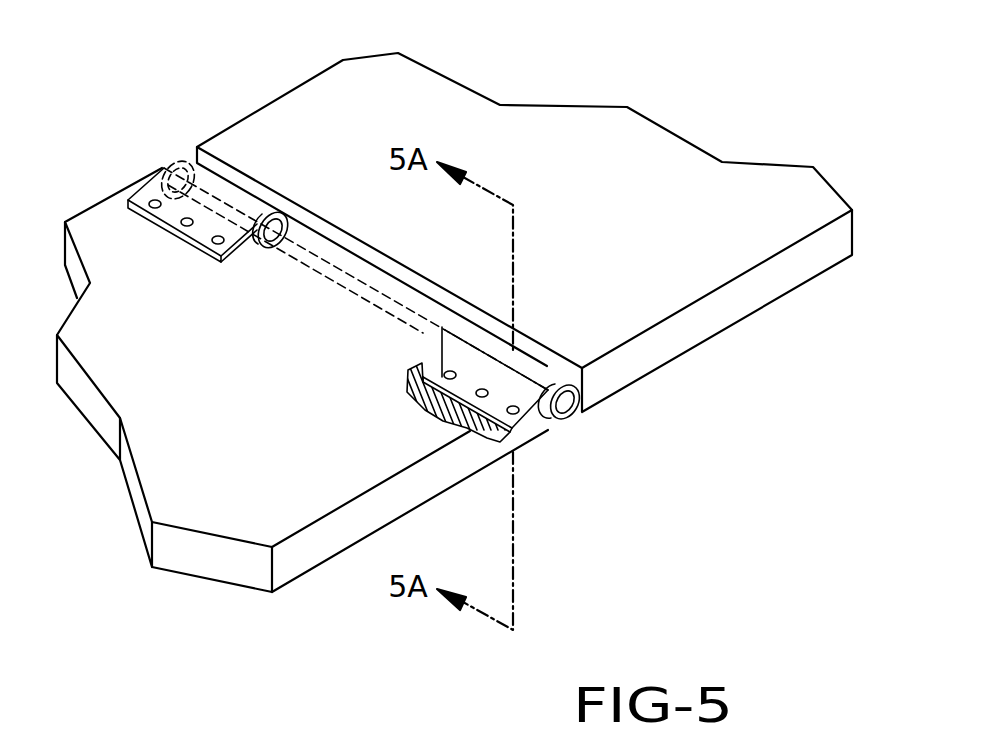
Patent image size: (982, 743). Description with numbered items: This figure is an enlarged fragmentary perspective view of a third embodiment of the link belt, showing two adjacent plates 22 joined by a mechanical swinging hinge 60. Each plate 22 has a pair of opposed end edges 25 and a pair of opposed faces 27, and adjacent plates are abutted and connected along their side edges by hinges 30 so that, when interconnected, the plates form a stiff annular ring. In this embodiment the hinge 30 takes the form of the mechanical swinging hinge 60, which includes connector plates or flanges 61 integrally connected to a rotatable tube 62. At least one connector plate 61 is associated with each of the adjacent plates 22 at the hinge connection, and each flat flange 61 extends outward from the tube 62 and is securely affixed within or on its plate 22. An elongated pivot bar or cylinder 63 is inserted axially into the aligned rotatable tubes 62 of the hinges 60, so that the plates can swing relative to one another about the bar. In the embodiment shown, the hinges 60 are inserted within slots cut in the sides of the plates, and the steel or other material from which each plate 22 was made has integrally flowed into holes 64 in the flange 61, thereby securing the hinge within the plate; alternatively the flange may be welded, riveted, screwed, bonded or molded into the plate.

The plate 22 is at (452, 333).
The end edge 25 is at (733, 303).
The face 27 is at (612, 148).
The hinge 30 is at (389, 334).
The mechanical swinging hinge 60 is at (389, 285).
The connector plate 61 is at (136, 202).
The rotatable tube 62 is at (546, 364).
The pivot bar 63 is at (568, 407).
The hole 64 is at (462, 331).